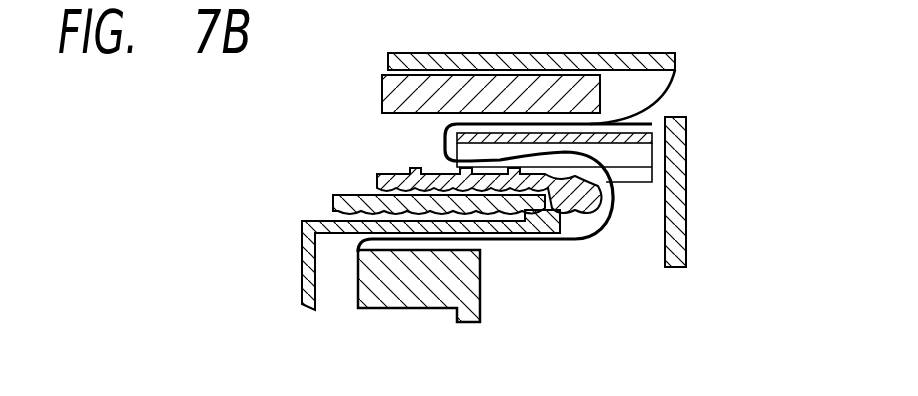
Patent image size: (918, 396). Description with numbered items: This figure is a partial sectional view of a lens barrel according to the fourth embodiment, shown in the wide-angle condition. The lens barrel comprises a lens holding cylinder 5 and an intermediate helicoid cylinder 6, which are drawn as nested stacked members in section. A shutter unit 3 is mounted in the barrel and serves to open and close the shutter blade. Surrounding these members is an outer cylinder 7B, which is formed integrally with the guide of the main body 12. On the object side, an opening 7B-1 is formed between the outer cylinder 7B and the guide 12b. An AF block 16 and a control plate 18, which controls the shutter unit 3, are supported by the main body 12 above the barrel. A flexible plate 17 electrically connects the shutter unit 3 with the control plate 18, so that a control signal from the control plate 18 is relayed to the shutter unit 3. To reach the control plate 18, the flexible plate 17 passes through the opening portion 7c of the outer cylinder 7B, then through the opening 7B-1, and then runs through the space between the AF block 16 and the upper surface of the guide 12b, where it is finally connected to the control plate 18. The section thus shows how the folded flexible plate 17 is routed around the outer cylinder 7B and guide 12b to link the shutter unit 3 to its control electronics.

The control plate 18 is at (677, 62).
The AF block 16 is at (382, 86).
The main body 12 is at (680, 202).
The guide 12b is at (648, 122).
The opening portion 7c is at (635, 181).
The opening 7B-1 is at (447, 147).
The flexible plate 17 is at (553, 242).
The outer cylinder 7B is at (380, 175).
The intermediate helicoid cylinder 6 is at (333, 203).
The lens holding cylinder 5 is at (310, 283).
The shutter unit 3 is at (427, 302).